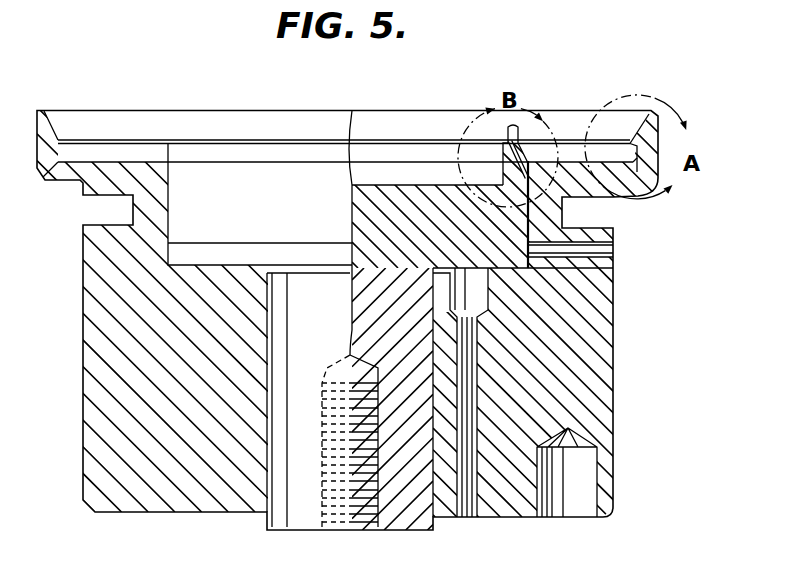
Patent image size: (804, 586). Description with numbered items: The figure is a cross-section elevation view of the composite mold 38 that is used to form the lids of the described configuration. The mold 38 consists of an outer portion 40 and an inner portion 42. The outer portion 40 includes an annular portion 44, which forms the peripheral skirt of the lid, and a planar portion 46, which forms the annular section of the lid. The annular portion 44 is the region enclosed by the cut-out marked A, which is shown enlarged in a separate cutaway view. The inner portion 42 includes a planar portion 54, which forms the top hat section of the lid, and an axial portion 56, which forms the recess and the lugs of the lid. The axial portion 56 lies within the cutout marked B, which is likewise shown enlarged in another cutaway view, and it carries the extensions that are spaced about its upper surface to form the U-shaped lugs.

The mold 38 is at (552, 94).
The outer portion 40 is at (648, 152).
The inner portion 42 is at (502, 157).
The annular portion 44 is at (665, 118).
The planar portion 46 is at (560, 143).
The planar portion 54 is at (400, 185).
The axial portion 56 is at (495, 130).